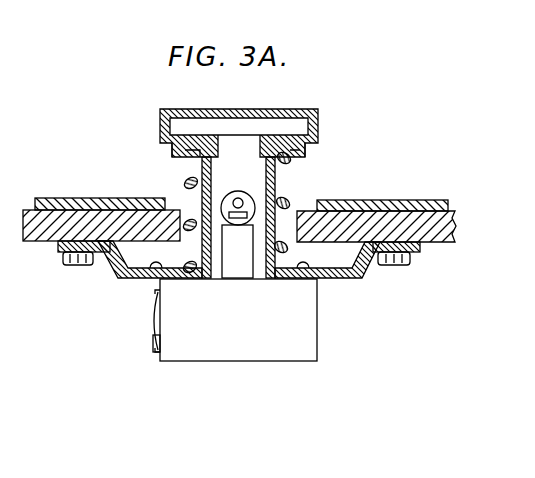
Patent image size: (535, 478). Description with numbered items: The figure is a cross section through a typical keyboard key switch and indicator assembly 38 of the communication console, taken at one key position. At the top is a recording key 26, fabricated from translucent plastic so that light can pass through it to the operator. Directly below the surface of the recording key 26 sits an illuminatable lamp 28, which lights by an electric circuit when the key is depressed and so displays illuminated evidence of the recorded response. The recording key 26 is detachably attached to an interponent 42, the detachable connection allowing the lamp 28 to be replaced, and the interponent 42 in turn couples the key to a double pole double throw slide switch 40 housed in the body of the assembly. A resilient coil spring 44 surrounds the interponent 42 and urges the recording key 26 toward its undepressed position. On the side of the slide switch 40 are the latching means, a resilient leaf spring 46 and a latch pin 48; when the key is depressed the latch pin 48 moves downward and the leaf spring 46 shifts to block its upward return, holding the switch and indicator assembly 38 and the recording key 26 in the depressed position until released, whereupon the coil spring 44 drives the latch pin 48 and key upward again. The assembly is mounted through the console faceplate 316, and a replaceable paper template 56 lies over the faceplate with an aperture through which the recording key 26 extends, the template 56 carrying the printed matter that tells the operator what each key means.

The recording key 26 is at (272, 110).
The illuminatable lamp 28 is at (226, 190).
The switch and indicator assembly 38 is at (130, 147).
The double pole double throw slide switch 40 is at (225, 350).
The interponent 42 is at (200, 197).
The resilient coil spring 44 is at (184, 180).
The resilient leaf spring 46 is at (150, 321).
The latch pin 48 is at (153, 352).
The template 56 is at (315, 200).
The console faceplate 316 is at (448, 222).